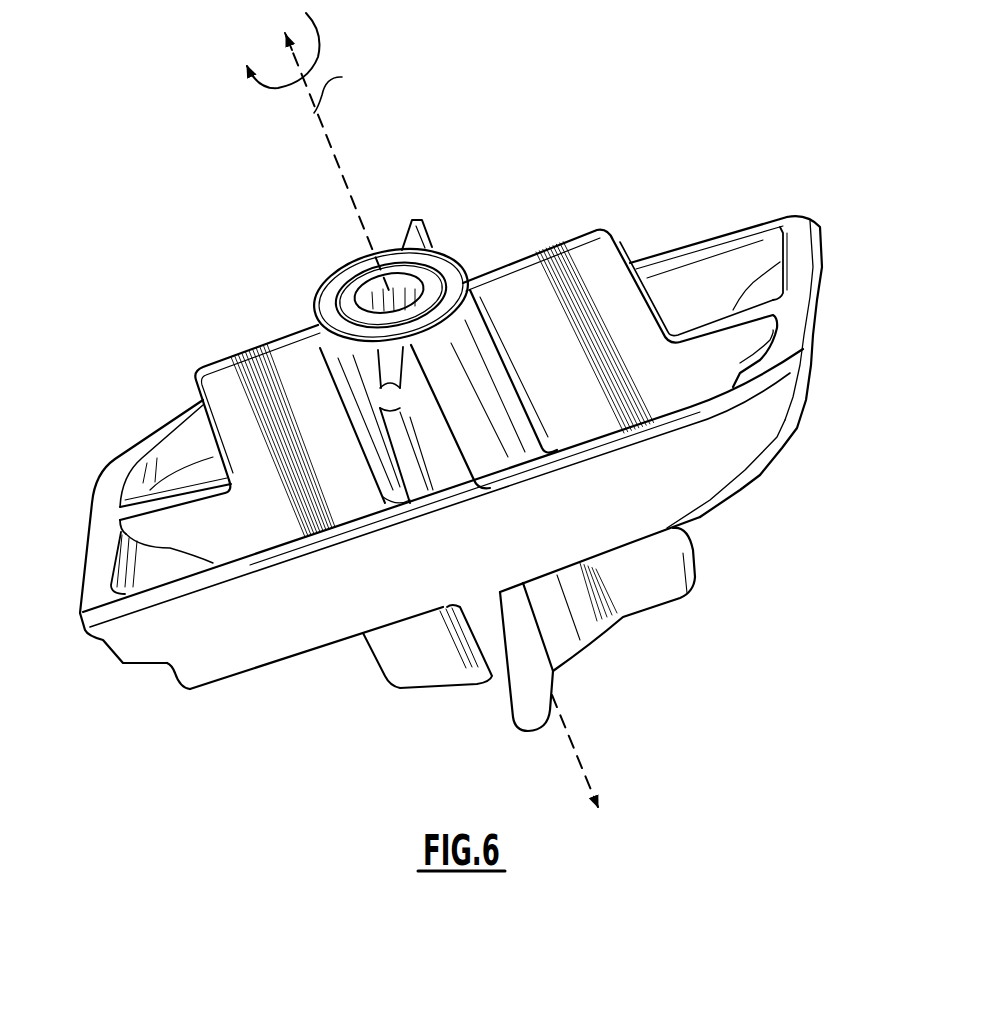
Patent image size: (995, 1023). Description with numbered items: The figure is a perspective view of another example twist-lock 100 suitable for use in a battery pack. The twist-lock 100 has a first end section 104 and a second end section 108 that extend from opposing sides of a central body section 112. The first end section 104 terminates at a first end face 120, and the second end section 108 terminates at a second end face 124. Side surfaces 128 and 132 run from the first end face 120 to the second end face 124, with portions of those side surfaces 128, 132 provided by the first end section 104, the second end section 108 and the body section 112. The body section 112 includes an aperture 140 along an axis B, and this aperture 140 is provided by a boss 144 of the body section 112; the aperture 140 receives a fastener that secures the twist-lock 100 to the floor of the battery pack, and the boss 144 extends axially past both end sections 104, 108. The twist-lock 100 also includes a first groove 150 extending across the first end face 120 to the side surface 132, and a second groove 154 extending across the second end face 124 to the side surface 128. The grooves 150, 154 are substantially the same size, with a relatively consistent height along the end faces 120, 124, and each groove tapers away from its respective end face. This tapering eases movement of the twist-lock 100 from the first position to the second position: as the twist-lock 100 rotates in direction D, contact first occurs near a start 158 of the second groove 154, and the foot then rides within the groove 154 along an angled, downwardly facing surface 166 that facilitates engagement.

The twist-lock 100 is at (460, 403).
The first end section 104 is at (142, 385).
The second end section 108 is at (737, 210).
The body section 112 is at (470, 197).
The first end face 120 is at (105, 642).
The second end face 124 is at (798, 382).
The side surface 128 is at (310, 627).
The side surface 132 is at (653, 258).
The aperture 140 is at (345, 260).
The boss 144 is at (490, 398).
The first groove 150 is at (165, 702).
The second groove 154 is at (750, 497).
The start 158 is at (667, 530).
The downwardly facing surface 166 is at (710, 500).